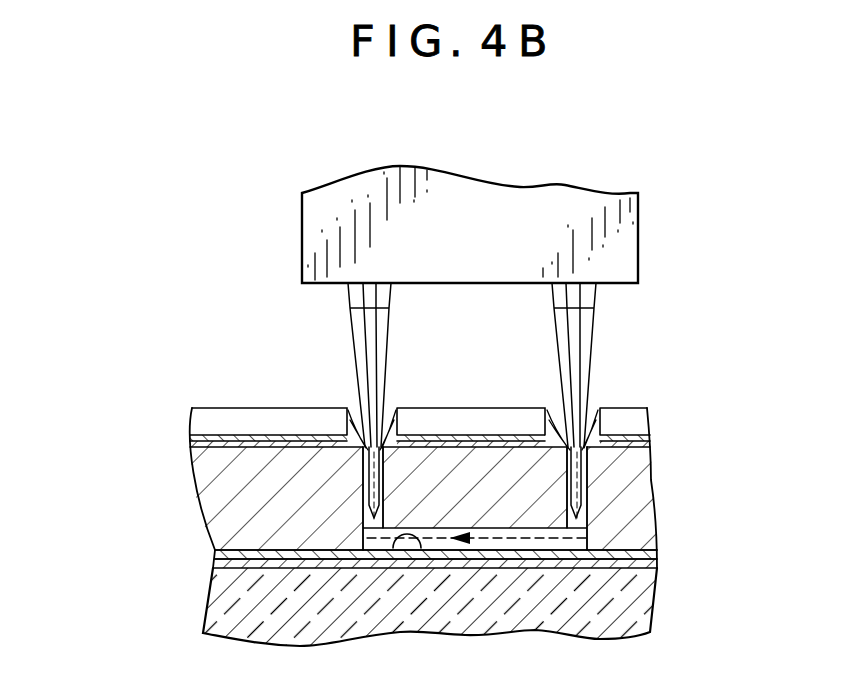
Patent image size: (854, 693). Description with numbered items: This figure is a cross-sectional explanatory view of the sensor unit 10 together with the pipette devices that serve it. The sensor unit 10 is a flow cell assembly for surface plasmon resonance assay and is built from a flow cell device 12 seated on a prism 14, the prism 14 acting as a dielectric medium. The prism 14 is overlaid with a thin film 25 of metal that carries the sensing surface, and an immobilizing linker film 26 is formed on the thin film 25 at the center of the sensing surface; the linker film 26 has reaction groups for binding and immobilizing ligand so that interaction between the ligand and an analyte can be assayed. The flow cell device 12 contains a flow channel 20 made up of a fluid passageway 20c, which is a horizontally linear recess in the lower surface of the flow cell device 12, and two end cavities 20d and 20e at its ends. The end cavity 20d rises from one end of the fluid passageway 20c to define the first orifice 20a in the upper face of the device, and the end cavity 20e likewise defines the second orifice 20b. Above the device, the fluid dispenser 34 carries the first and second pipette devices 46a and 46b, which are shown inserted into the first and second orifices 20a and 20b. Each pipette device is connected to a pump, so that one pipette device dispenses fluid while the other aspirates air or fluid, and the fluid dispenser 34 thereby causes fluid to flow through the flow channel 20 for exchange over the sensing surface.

The sensor unit 10 is at (168, 391).
The flow cell device 12 is at (660, 446).
The prism 14 is at (655, 627).
The flow channel 20 is at (459, 503).
The first orifice 20a is at (600, 402).
The second orifice 20b is at (390, 407).
The fluid passageway 20c is at (421, 548).
The end cavity 20d is at (585, 503).
The end cavity 20e is at (365, 490).
The thin film 25 is at (665, 557).
The linker film 26 is at (205, 555).
The fluid dispenser 34 is at (640, 235).
The first pipette device 46a is at (598, 322).
The second pipette device 46b is at (350, 320).